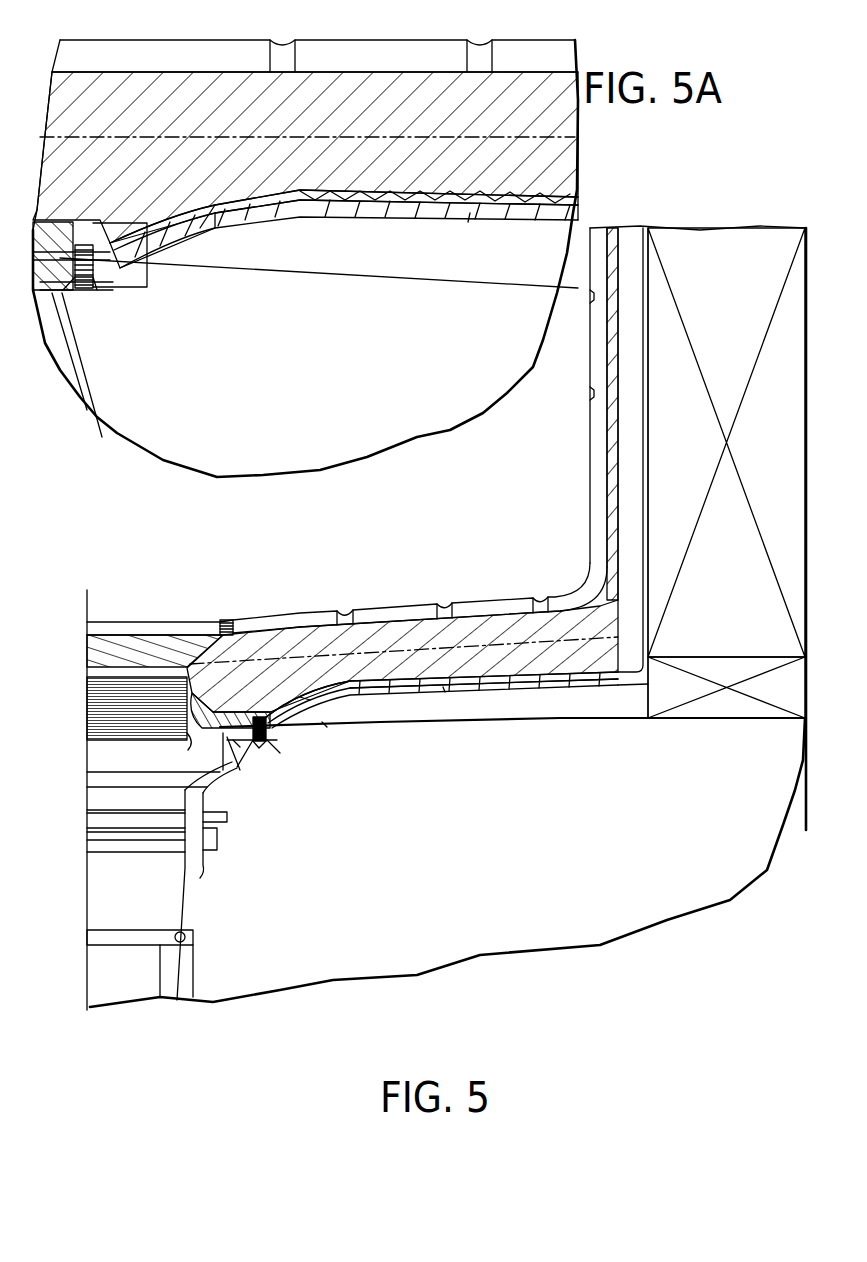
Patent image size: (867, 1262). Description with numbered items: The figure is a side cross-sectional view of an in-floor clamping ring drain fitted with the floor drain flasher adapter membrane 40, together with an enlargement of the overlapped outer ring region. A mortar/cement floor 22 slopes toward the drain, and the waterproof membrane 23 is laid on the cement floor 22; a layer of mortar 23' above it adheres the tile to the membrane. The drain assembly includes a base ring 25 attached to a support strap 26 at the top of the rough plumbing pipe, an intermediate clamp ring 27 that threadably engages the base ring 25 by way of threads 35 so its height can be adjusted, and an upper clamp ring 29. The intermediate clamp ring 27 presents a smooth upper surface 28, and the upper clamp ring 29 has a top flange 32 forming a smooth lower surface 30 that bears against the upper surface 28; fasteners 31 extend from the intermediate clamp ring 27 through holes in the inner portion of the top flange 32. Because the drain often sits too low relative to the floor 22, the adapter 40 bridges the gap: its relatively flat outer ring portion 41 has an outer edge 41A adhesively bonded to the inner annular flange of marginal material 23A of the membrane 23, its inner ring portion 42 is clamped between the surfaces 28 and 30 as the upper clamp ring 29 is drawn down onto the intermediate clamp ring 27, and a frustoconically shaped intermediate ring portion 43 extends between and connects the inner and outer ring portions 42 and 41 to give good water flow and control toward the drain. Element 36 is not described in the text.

In FIG. 5A, the mortar/cement floor 22 is at (513, 277).
In FIG. 5, the mortar/cement floor 22 is at (452, 712).
In FIG. 5A, the waterproof membrane 23 is at (558, 220).
In FIG. 5, the waterproof membrane 23 is at (507, 689).
In FIG. 5A, the layer of mortar 23′ is at (382, 93).
In FIG. 5, the layer of mortar 23′ is at (400, 638).
In FIG. 5A, the marginal material 23A is at (397, 197).
In FIG. 5, the marginal material 23A is at (417, 677).
In FIG. 5, the base ring 25 is at (203, 862).
In FIG. 5, the support strap 26 is at (193, 935).
In FIG. 5, the intermediate clamp ring 27 is at (228, 780).
In FIG. 5A, the smooth upper surface 28 is at (110, 260).
In FIG. 5, the smooth upper surface 28 is at (275, 738).
In FIG. 5, the upper clamp ring 29 is at (250, 705).
In FIG. 5A, the smooth lower surface 30 is at (70, 233).
In FIG. 5, the smooth lower surface 30 is at (262, 717).
In FIG. 5A, the fasteners 31 is at (83, 297).
In FIG. 5, the fasteners 31 is at (260, 745).
In FIG. 5A, the top flange 32 is at (207, 232).
In FIG. 5, the top flange 32 is at (310, 700).
In FIG. 5, the threads 35 is at (217, 835).
In FIG. 5, the elastomeric pad 36 is at (196, 735).
In FIG. 5A, the floor drain flasher adapter membrane 40 is at (217, 195).
In FIG. 5, the floor drain flasher adapter membrane 40 is at (322, 680).
In FIG. 5A, the outer ring portion 41 is at (330, 195).
In FIG. 5, the outer ring portion 41 is at (357, 683).
In FIG. 5A, the outer edge 41A is at (470, 213).
In FIG. 5, the outer edge 41A is at (443, 687).
In FIG. 5A, the inner ring portion 42 is at (102, 437).
In FIG. 5, the inner ring portion 42 is at (240, 747).
In FIG. 5A, the intermediate ring portion 43 is at (173, 262).
In FIG. 5, the intermediate ring portion 43 is at (327, 727).